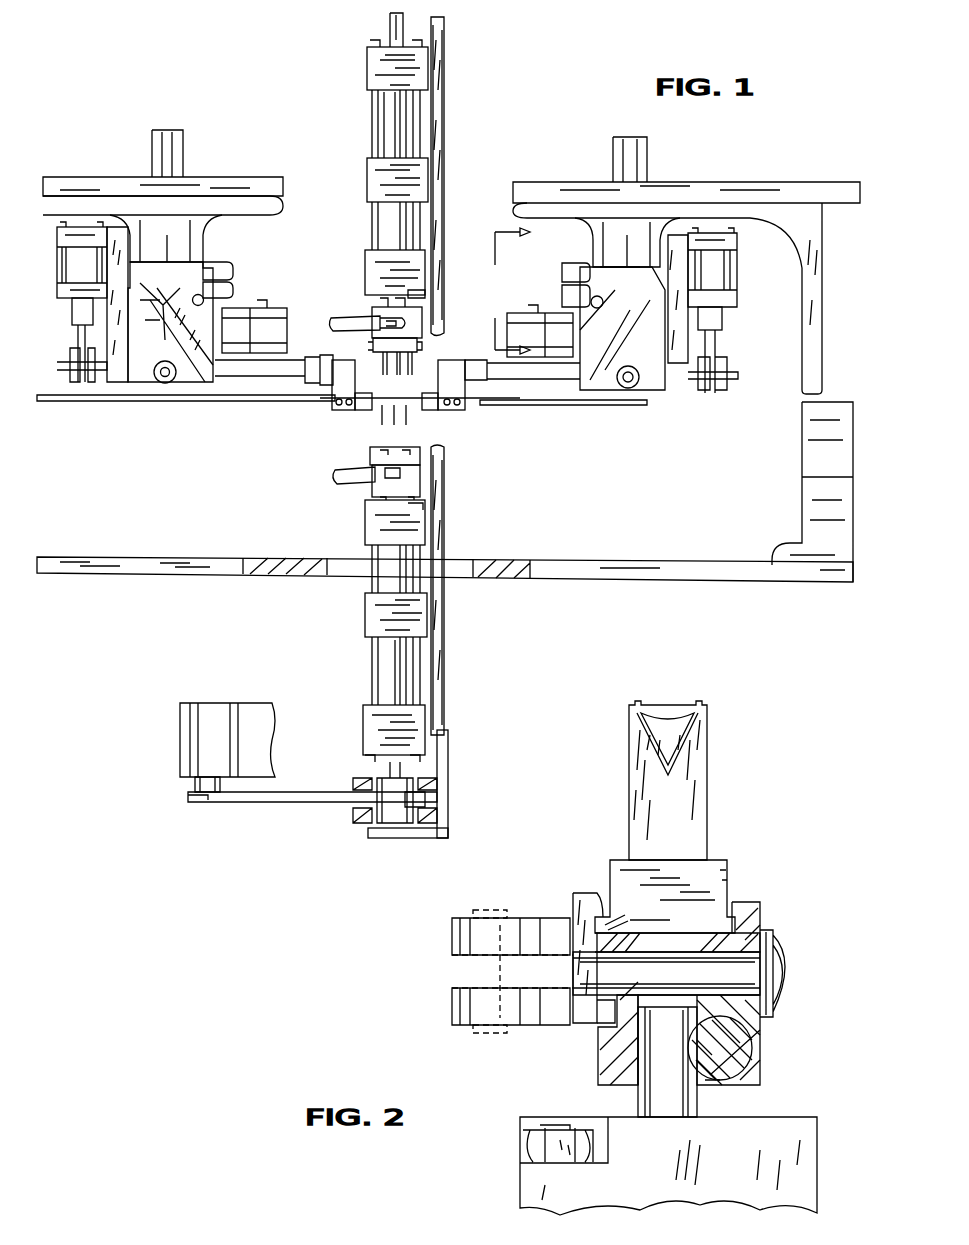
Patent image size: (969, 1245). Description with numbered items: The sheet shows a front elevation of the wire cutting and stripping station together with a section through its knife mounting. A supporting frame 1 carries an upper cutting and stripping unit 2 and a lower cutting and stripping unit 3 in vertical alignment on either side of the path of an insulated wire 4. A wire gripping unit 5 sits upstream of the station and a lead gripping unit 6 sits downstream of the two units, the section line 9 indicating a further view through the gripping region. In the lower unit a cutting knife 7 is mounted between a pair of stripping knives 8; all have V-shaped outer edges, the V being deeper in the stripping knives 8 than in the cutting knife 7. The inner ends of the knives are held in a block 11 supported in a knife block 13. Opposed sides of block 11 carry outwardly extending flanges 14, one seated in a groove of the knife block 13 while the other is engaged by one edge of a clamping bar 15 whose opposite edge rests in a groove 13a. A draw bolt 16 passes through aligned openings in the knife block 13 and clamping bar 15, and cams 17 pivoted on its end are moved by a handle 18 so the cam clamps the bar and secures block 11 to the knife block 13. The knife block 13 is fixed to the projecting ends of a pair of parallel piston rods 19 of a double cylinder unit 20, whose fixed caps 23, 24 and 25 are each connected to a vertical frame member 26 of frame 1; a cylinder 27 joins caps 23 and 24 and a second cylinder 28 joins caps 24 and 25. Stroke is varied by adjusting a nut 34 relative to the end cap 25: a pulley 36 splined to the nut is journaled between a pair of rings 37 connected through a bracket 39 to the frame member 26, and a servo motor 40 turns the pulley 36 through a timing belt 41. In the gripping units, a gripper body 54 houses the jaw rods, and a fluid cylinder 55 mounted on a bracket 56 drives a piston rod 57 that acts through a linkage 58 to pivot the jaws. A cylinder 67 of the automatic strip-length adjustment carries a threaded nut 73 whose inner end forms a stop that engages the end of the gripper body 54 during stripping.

In FIG. 1, the frame 1 is at (812, 175).
In FIG. 1, the upper cutting and stripping unit 2 is at (460, 200).
In FIG. 1, the lower cutting and stripping unit 3 is at (456, 653).
In FIG. 2, the lower cutting and stripping unit 3 is at (780, 1064).
In FIG. 1, the insulated wire 4 is at (168, 402).
In FIG. 1, the wire gripping unit 5 is at (323, 421).
In FIG. 1, the lead gripping unit 6 is at (477, 401).
In FIG. 2, the cutting knife 7 is at (673, 718).
In FIG. 2, the stripping knives 8 is at (695, 780).
In FIG. 1, the section line 9 is at (502, 290).
In FIG. 1, the block 11 is at (372, 452).
In FIG. 2, the block 11 is at (728, 872).
In FIG. 2, the knife block 13 is at (760, 912).
In FIG. 2, the groove 13a is at (600, 1040).
In FIG. 2, the flanges 14 is at (725, 922).
In FIG. 2, the clamping bar 15 is at (578, 895).
In FIG. 2, the draw bolt 16 is at (793, 952).
In FIG. 2, the cams 17 is at (545, 925).
In FIG. 1, the handle 18 is at (336, 314).
In FIG. 2, the piston rods 19 is at (685, 1100).
In FIG. 1, the double cylinder unit 20 is at (363, 664).
In FIG. 2, the double cylinder unit 20 is at (822, 1140).
In FIG. 1, the fixed cap 23 is at (375, 268).
In FIG. 1, the fixed cap 24 is at (375, 176).
In FIG. 1, the end cap 25 is at (372, 72).
In FIG. 1, the vertical frame member 26 is at (445, 57).
In FIG. 1, the cylinder 27 is at (385, 222).
In FIG. 1, the second cylinder 28 is at (385, 118).
In FIG. 1, the nut 34 is at (388, 835).
In FIG. 1, the pulley 36 is at (418, 825).
In FIG. 1, the rings 37 is at (360, 778).
In FIG. 1, the bracket 39 is at (445, 800).
In FIG. 1, the servo motor 40 is at (200, 735).
In FIG. 1, the timing belt 41 is at (297, 803).
In FIG. 1, the gripper body 54 is at (195, 375).
In FIG. 1, the fluid cylinder 55 is at (70, 265).
In FIG. 1, the bracket 56 is at (680, 240).
In FIG. 1, the piston rod 57 is at (70, 302).
In FIG. 1, the linkage 58 is at (78, 340).
In FIG. 1, the cylinder 67 is at (275, 320).
In FIG. 1, the nut 73 is at (235, 340).